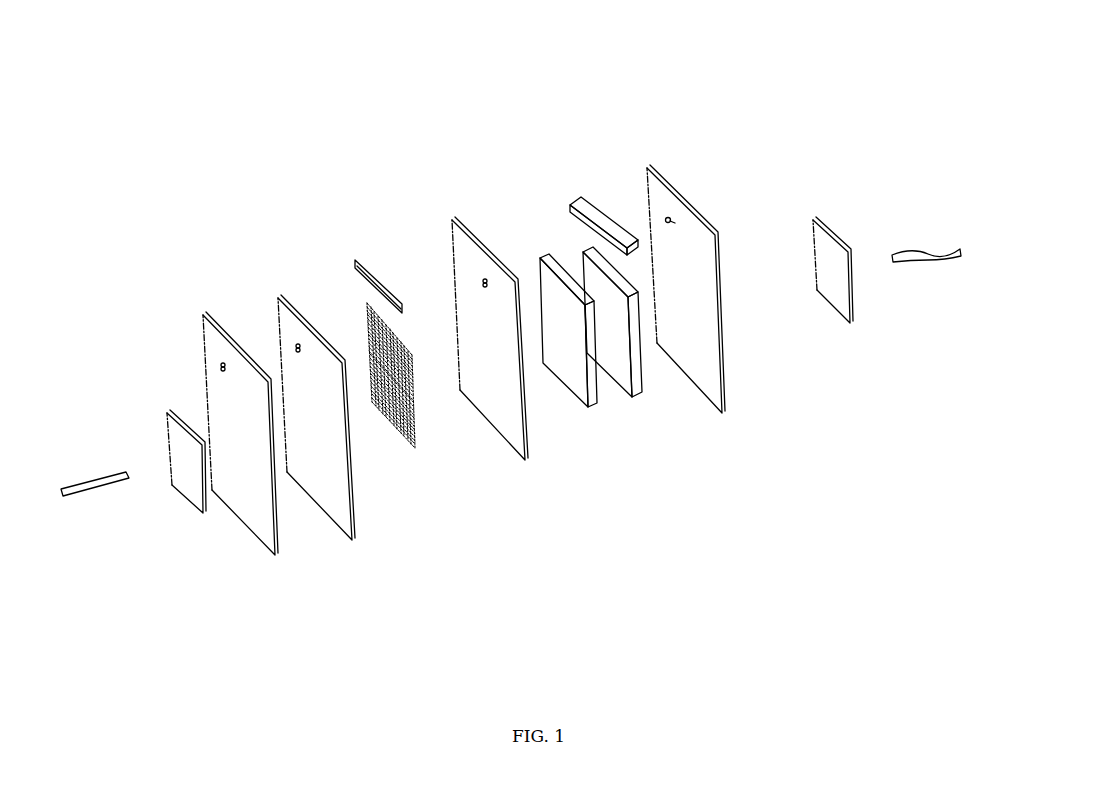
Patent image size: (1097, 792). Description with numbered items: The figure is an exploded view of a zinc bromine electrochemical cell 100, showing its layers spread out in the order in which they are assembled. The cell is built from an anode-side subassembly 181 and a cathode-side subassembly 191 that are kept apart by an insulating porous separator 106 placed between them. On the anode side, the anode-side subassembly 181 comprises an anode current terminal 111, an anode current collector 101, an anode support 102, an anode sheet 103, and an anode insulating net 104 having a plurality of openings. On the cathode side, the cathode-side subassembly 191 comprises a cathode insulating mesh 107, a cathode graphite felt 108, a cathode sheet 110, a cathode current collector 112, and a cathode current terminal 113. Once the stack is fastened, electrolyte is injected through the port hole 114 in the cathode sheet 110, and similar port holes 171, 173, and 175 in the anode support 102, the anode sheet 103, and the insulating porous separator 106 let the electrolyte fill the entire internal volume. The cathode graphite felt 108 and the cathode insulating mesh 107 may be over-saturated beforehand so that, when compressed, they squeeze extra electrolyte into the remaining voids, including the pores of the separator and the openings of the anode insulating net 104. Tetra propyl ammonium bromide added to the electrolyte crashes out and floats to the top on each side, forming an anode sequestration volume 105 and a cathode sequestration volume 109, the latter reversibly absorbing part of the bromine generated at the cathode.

The zinc bromine electrochemical cell 100 is at (210, 68).
The anode-side subassembly 181 is at (217, 183).
The cathode-side subassembly 191 is at (758, 455).
The anode current terminal 111 is at (85, 468).
The anode current collector 101 is at (159, 447).
The anode support 102 is at (208, 418).
The port hole 171 is at (217, 360).
The anode sheet 103 is at (288, 399).
The port hole 173 is at (292, 345).
The anode insulating net 104 is at (359, 356).
The anode sequestration volume 105 is at (356, 265).
The insulating porous separator 106 is at (462, 318).
The port hole 175 is at (480, 278).
The cathode insulating mesh 107 is at (543, 311).
The cathode graphite felt 108 is at (587, 302).
The cathode sequestration volume 109 is at (587, 206).
The cathode sheet 110 is at (660, 270).
The port hole 114 is at (698, 192).
The cathode current collector 112 is at (811, 249).
The cathode current terminal 113 is at (926, 234).